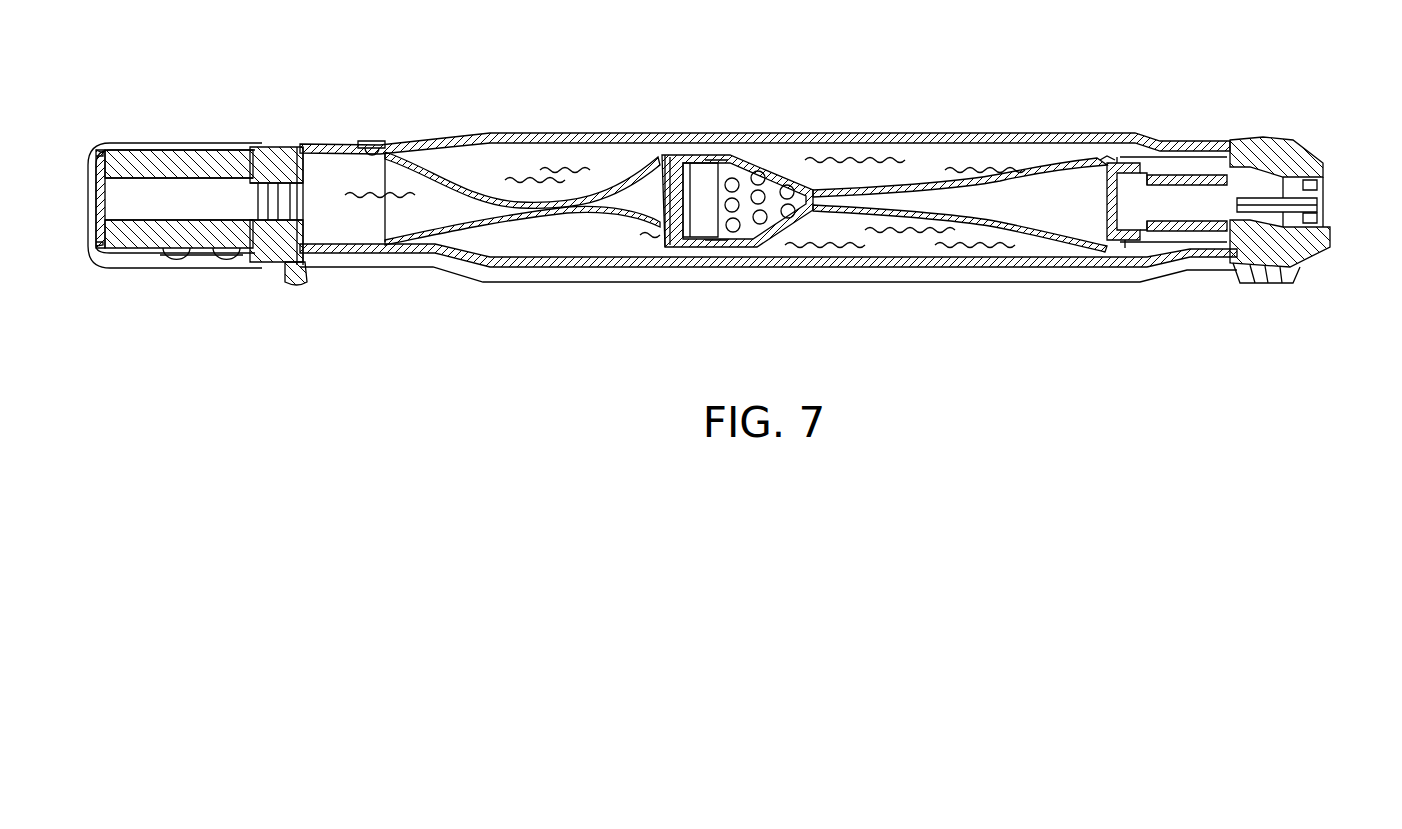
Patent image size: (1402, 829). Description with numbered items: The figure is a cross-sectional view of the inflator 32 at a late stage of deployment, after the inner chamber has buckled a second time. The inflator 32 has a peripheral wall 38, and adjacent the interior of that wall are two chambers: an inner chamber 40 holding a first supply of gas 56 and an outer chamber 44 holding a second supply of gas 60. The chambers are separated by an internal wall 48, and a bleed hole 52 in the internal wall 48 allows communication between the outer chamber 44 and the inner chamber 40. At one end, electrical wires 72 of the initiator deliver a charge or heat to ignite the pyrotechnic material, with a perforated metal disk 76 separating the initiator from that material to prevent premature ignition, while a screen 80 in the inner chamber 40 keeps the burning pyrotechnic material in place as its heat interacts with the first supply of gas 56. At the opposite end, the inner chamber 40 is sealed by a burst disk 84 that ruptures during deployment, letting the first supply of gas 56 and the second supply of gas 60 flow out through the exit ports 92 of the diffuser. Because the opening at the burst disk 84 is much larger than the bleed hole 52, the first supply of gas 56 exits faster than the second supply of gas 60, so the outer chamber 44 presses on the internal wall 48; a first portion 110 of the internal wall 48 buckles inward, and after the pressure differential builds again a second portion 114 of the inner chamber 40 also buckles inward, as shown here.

The inflator 32 is at (769, 283).
The peripheral wall 38 is at (665, 157).
The inner chamber 40 is at (460, 208).
The outer chamber 44 is at (547, 160).
The internal wall 48 is at (493, 197).
The bleed hole 52 is at (657, 220).
The first supply of gas 56 is at (227, 203).
The second supply of gas 60 is at (600, 167).
The electrical wires 72 is at (1307, 210).
The perforated metal disk 76 is at (1118, 160).
The screen 80 is at (740, 167).
The burst disk 84 is at (300, 192).
The exit ports 92 is at (222, 267).
The first portion 110 is at (527, 217).
The second portion 114 is at (1027, 222).